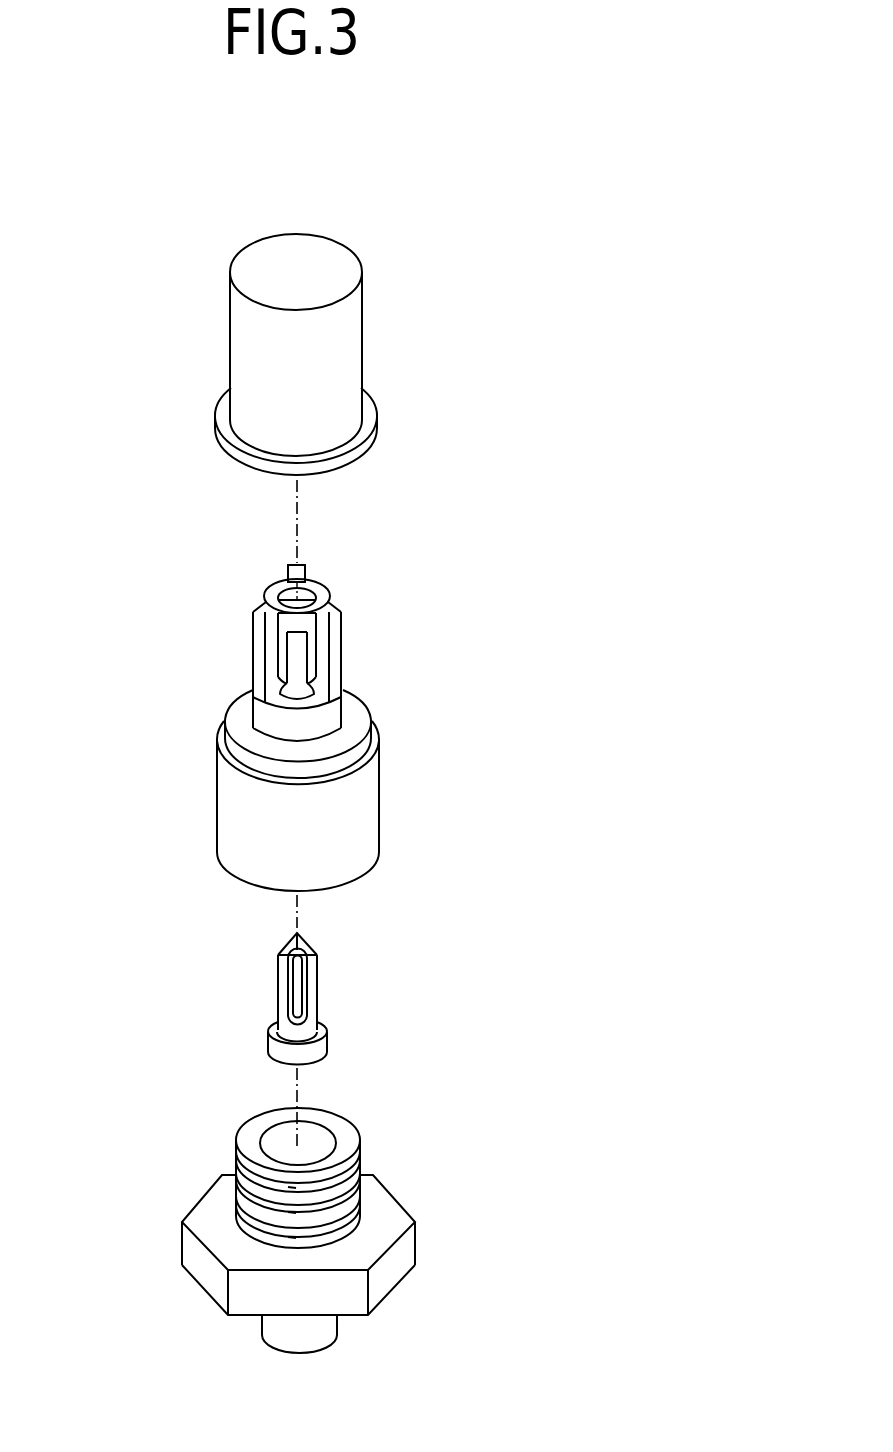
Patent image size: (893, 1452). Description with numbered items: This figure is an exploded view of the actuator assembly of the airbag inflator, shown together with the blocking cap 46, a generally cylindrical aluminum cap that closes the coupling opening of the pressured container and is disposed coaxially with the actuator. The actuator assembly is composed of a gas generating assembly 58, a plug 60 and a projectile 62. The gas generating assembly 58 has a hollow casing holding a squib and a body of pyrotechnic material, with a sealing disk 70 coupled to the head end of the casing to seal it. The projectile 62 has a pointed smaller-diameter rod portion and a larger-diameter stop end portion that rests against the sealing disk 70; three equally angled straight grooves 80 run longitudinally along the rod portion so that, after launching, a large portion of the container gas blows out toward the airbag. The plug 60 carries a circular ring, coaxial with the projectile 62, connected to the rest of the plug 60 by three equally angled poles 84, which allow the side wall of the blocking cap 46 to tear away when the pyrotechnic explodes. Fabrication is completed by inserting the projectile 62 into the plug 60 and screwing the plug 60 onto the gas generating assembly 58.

The blocking cap 46 is at (352, 260).
The plug 60 is at (314, 695).
The poles 84 is at (305, 563).
The projectile 62 is at (340, 971).
The straight grooves 80 is at (297, 1003).
The sealing disk 70 is at (283, 1147).
The gas generating assembly 58 is at (327, 1185).